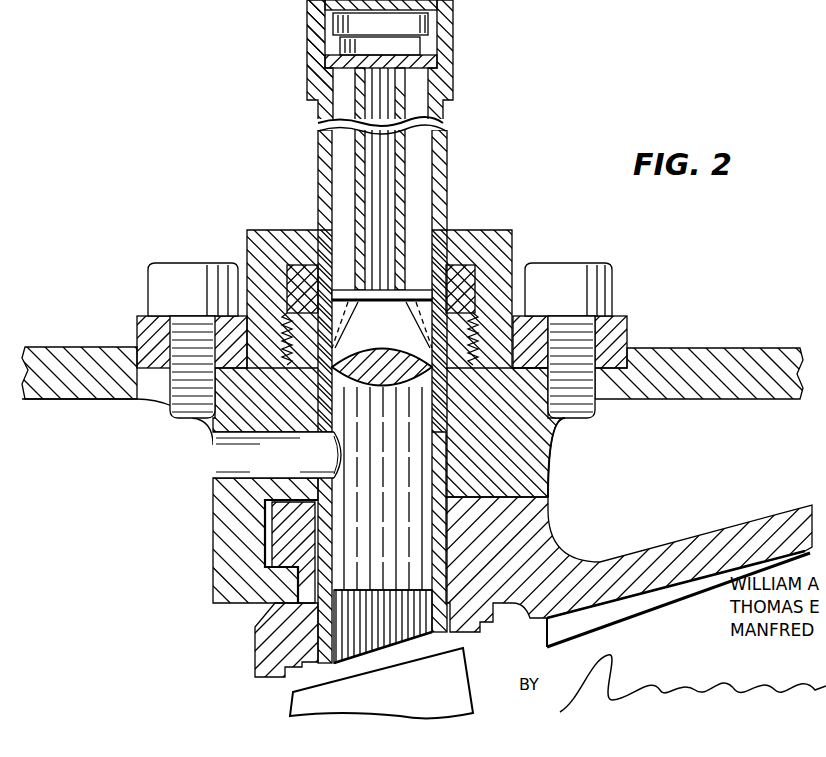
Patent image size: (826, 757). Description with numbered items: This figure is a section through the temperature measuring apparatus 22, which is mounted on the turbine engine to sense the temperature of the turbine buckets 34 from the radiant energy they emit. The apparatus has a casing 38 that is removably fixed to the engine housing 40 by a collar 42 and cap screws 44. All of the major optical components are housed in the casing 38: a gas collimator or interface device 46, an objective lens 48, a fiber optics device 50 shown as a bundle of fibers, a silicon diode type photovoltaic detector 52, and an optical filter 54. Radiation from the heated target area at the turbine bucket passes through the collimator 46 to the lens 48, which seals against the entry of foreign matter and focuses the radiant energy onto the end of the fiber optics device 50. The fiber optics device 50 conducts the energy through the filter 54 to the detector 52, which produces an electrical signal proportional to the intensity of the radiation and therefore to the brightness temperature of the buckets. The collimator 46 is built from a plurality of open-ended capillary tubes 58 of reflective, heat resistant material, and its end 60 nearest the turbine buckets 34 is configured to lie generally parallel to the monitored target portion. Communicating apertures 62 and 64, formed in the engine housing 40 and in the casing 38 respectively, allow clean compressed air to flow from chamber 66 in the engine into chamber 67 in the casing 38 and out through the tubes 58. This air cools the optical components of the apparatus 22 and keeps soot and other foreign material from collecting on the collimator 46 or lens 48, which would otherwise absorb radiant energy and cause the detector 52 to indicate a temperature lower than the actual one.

The temperature measuring apparatus 22 is at (413, 378).
The turbine buckets 34 is at (462, 690).
The casing 38 is at (315, 208).
The housing 40 is at (80, 347).
The collar 42 is at (258, 230).
The cap screws 44 is at (174, 263).
The gas collimator 46 is at (384, 590).
The objective lens 48 is at (405, 352).
The fiber optics device 50 is at (409, 182).
The photovoltaic detector 52 is at (436, 24).
The optical filter 54 is at (440, 63).
The capillary tubes 58 is at (358, 648).
The end 60 is at (398, 648).
The aperture 62 is at (232, 477).
The aperture 64 is at (324, 467).
The chamber 66 is at (88, 438).
The chamber 67 is at (420, 430).